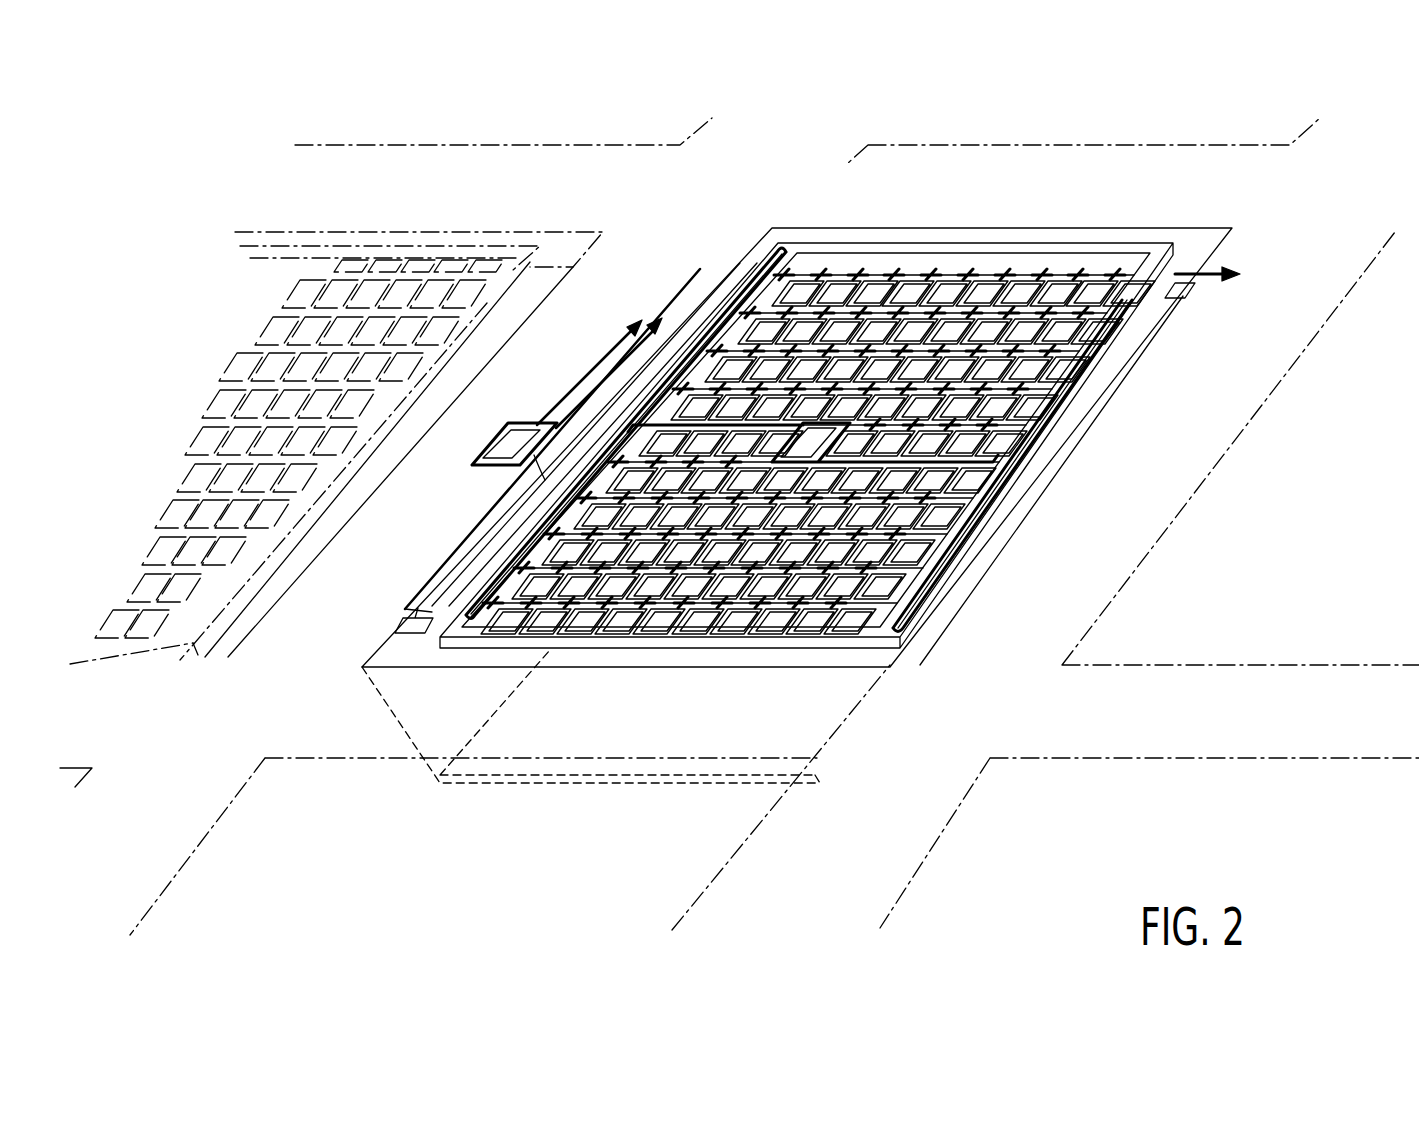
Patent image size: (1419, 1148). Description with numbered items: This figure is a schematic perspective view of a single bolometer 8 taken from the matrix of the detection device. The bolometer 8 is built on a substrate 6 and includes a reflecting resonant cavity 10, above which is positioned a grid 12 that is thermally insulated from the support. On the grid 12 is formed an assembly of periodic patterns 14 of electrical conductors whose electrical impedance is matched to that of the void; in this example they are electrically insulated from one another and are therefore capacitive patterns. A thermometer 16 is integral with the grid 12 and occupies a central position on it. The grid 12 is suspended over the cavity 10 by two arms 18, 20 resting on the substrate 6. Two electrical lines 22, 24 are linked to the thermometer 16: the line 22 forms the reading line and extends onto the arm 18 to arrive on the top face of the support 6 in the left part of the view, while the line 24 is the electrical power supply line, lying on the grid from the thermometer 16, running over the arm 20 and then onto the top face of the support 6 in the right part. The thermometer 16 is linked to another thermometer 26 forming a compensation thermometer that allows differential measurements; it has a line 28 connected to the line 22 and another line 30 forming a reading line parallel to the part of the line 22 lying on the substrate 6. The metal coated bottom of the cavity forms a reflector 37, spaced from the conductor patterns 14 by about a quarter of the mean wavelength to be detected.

The substrate 6 is at (778, 210).
The bolometer 8 is at (418, 243).
The reflecting resonant cavity 10 is at (690, 662).
The grid 12 is at (490, 650).
The periodic patterns of electrical conductors 14 is at (1095, 325).
The thermometer 16 is at (818, 442).
The arm 18 is at (405, 627).
The arm 20 is at (1180, 300).
The electrical line 22 is at (728, 292).
The electrical line 24 is at (968, 545).
The compensation thermometer 26 is at (523, 435).
The line 28 is at (500, 500).
The reading line 30 is at (592, 370).
The reflector 37 is at (552, 785).